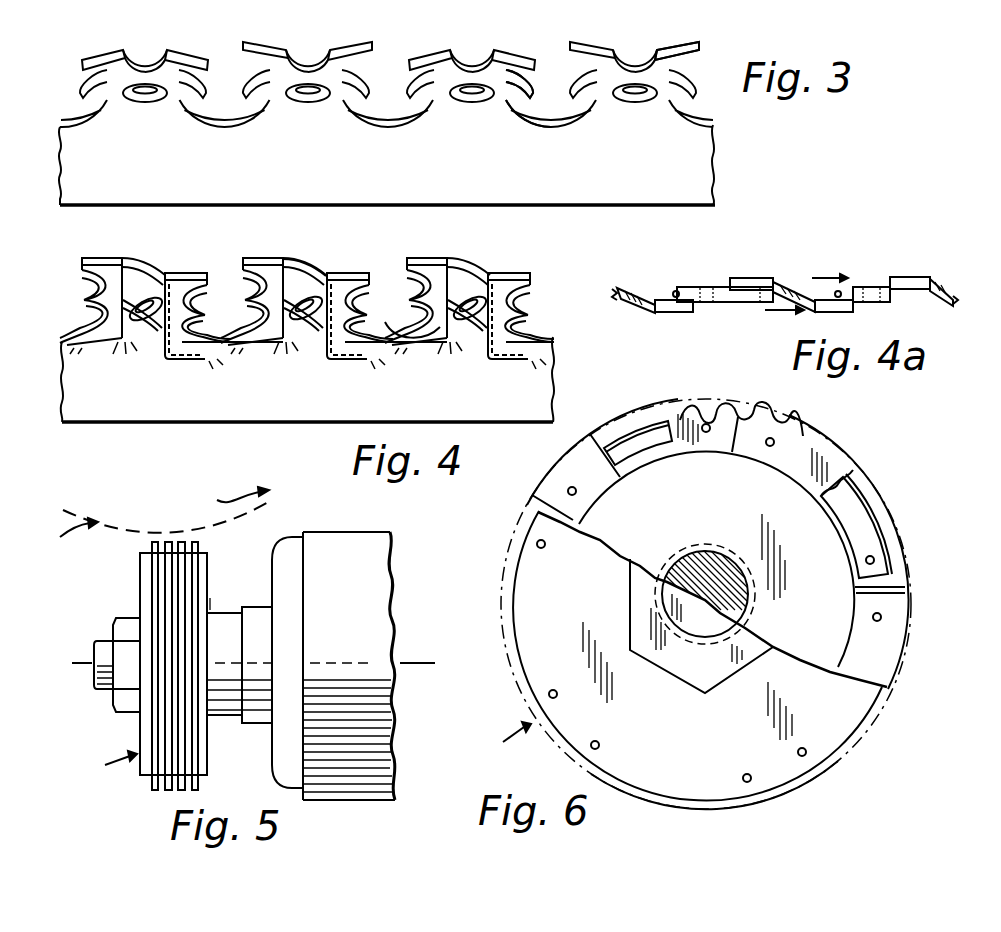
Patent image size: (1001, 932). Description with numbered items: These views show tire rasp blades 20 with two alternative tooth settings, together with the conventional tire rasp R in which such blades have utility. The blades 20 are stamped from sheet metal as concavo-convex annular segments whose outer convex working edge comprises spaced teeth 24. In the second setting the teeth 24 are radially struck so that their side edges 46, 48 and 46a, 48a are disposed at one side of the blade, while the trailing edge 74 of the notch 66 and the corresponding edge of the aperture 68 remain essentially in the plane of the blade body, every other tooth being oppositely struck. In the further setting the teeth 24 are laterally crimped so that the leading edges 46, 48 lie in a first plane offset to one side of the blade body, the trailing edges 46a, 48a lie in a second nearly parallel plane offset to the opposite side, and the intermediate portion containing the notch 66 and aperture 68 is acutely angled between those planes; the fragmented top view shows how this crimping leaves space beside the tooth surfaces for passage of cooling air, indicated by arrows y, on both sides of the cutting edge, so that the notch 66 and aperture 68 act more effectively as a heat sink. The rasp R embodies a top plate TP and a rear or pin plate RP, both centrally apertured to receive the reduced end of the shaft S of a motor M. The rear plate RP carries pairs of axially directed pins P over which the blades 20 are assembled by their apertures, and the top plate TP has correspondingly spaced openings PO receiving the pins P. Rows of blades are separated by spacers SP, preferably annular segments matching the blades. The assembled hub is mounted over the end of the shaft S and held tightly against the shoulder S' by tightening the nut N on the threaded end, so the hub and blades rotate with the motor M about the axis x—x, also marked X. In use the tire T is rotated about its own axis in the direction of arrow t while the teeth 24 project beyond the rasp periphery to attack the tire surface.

In FIG. 3, the leading edge 46 is at (558, 58).
In FIG. 4, the leading edge 46 is at (410, 284).
In FIG. 4A, the leading edge 46 is at (745, 303).
In FIG. 3, the trailing edge 46a is at (527, 78).
In FIG. 4, the trailing edge 46a is at (375, 278).
In FIG. 4A, the trailing edge 46a is at (690, 292).
In FIG. 3, the leading edge 48 is at (567, 125).
In FIG. 4, the leading edge 48 is at (403, 345).
In FIG. 3, the trailing edge 48a is at (536, 127).
In FIG. 4, the trailing edge 48a is at (372, 343).
In FIG. 3, the notch 66 is at (625, 55).
In FIG. 4, the notch 66 is at (468, 284).
In FIG. 4A, the notch 66 is at (783, 283).
In FIG. 3, the trailing edge of the notch 74 is at (643, 57).
In FIG. 4, the teeth 24 is at (483, 290).
In FIG. 4, the aperture 68 is at (463, 340).
In FIG. 4A, the axis x— x is at (835, 266).
In FIG. 4A, the cooling air arrows y is at (765, 310).
In FIG. 5, the tire rasp blade 20 is at (200, 553).
In FIG. 5, the rear or pin plate RP is at (207, 568).
In FIG. 6, the rear or pin plate RP is at (738, 503).
In FIG. 5, the top plate TP is at (140, 573).
In FIG. 6, the top plate TP is at (722, 740).
In FIG. 5, the spacers SP is at (190, 600).
In FIG. 6, the spacers SP is at (830, 515).
In FIG. 5, the shaft S is at (239, 685).
In FIG. 6, the shaft S is at (705, 578).
In FIG. 5, the shoulder S' is at (228, 600).
In FIG. 5, the nut N is at (113, 700).
In FIG. 5, the motor M is at (350, 638).
In FIG. 5, the axis x—x X is at (252, 664).
In FIG. 6, the axis x—x X is at (698, 600).
In FIG. 5, the tire T is at (156, 526).
In FIG. 5, the arrow t is at (234, 500).
In FIG. 5, the tire rasp R is at (113, 671).
In FIG. 6, the tire rasp R is at (697, 604).
In FIG. 6, the openings PO is at (538, 547).
In FIG. 6, the pins P is at (771, 444).